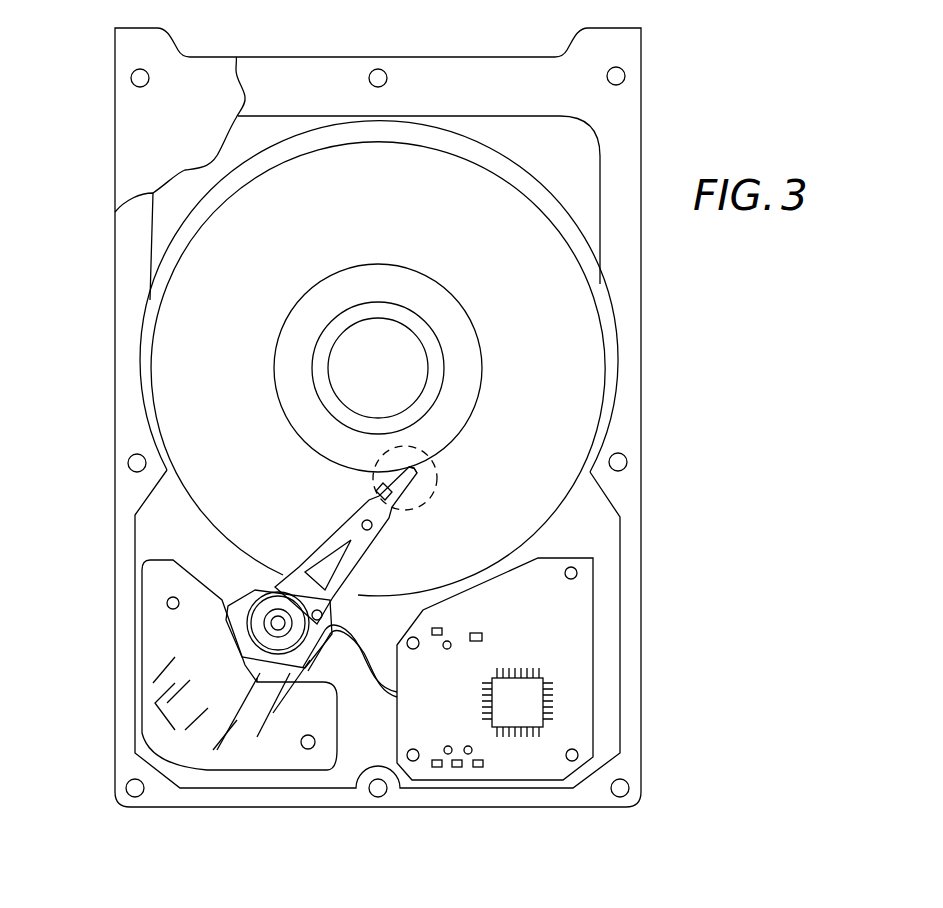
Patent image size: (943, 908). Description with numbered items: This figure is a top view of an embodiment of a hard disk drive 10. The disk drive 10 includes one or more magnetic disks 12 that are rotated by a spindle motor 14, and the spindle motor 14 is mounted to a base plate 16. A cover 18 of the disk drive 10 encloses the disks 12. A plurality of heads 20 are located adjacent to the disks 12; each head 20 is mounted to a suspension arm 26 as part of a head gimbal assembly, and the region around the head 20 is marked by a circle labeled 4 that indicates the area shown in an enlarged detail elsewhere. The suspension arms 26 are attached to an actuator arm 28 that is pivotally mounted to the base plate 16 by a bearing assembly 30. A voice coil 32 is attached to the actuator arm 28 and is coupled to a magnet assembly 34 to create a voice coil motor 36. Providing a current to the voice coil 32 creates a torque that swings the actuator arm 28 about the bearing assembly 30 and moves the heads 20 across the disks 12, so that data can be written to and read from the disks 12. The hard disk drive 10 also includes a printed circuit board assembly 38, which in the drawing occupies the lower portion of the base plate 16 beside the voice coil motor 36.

The detail view region 4 is at (442, 475).
The hard disk drive 10 is at (632, 348).
The magnetic disk 12 is at (378, 369).
The spindle motor 14 is at (380, 362).
The base plate 16 is at (585, 197).
The cover 18 is at (128, 124).
The head 20 is at (417, 473).
The suspension arm 26 is at (390, 500).
The actuator arm 28 is at (285, 582).
The bearing assembly 30 is at (265, 637).
The voice coil 32 is at (213, 760).
The magnet assembly 34 is at (287, 760).
The voice coil motor 36 is at (125, 700).
The printed circuit board assembly 38 is at (572, 695).